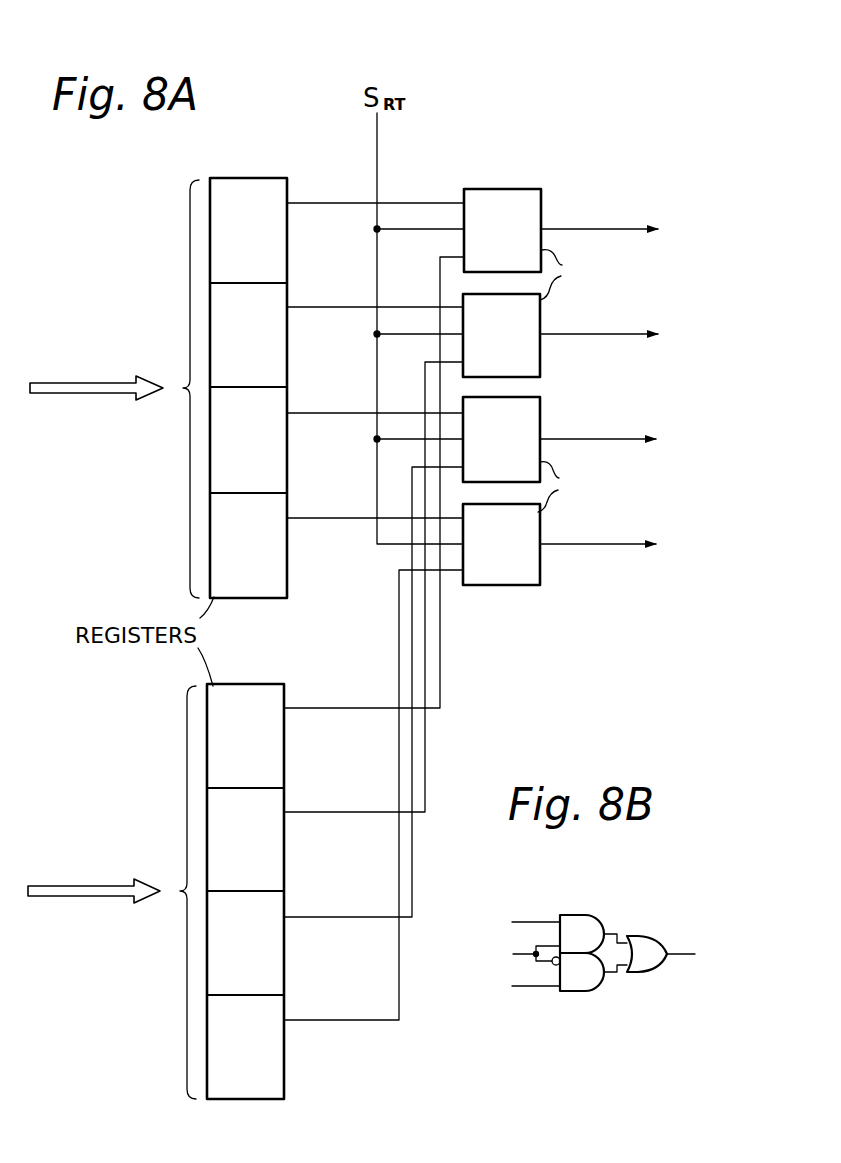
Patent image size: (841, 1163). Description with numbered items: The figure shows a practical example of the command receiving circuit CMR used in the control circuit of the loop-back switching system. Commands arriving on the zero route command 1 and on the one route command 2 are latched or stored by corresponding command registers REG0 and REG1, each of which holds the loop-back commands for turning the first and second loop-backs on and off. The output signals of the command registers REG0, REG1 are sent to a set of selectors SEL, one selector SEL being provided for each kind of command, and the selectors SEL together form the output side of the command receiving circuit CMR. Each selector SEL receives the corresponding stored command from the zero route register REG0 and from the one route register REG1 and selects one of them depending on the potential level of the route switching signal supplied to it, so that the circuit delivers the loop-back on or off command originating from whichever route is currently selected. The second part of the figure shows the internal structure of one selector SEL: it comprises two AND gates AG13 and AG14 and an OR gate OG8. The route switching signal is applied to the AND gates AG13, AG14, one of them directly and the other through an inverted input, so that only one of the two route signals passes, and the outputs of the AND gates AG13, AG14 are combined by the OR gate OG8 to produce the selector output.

In FIG. 8A, the 0 route command 1 is at (93, 393).
In FIG. 8A, the 1 route command 2 is at (91, 896).
In FIG. 8A, the command register REG0 is at (250, 178).
In FIG. 8A, the command register REG1 is at (248, 684).
In FIG. 8A, the command receiving circuit CMR is at (602, 136).
In FIG. 8B, the selector SEL is at (638, 870).
In FIG. 8B, the AND gate AG13 is at (574, 915).
In FIG. 8B, the AND gate AG14 is at (573, 992).
In FIG. 8B, the OR gate OG8 is at (642, 937).